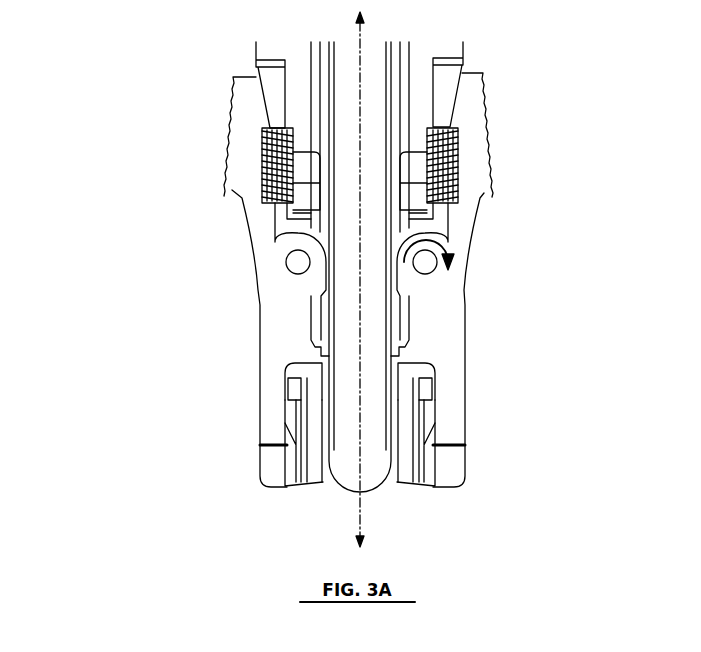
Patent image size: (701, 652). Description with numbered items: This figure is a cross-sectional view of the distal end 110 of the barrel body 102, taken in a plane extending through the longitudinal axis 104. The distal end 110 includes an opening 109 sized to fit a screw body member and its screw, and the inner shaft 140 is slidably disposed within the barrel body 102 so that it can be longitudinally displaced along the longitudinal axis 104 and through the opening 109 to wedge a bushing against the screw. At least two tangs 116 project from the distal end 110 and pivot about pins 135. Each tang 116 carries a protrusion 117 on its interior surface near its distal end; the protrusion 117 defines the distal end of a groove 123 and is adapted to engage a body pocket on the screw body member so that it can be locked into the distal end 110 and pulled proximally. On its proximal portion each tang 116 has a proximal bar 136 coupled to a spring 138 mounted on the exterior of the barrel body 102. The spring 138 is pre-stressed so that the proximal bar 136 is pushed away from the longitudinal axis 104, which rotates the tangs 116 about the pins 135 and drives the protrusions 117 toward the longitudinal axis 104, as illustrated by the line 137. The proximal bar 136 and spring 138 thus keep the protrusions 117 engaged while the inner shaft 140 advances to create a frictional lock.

The barrel body 102 is at (448, 45).
The longitudinal axis 104 is at (366, 517).
The opening 109 is at (312, 504).
The distal end 110 is at (128, 73).
The tang 116 is at (258, 307).
The protrusion 117 is at (270, 422).
The groove 123 is at (440, 366).
The pin 135 is at (298, 262).
The proximal bar 136 is at (245, 122).
The line 137 is at (440, 242).
The spring 138 is at (462, 165).
The inner shaft 140 is at (340, 322).